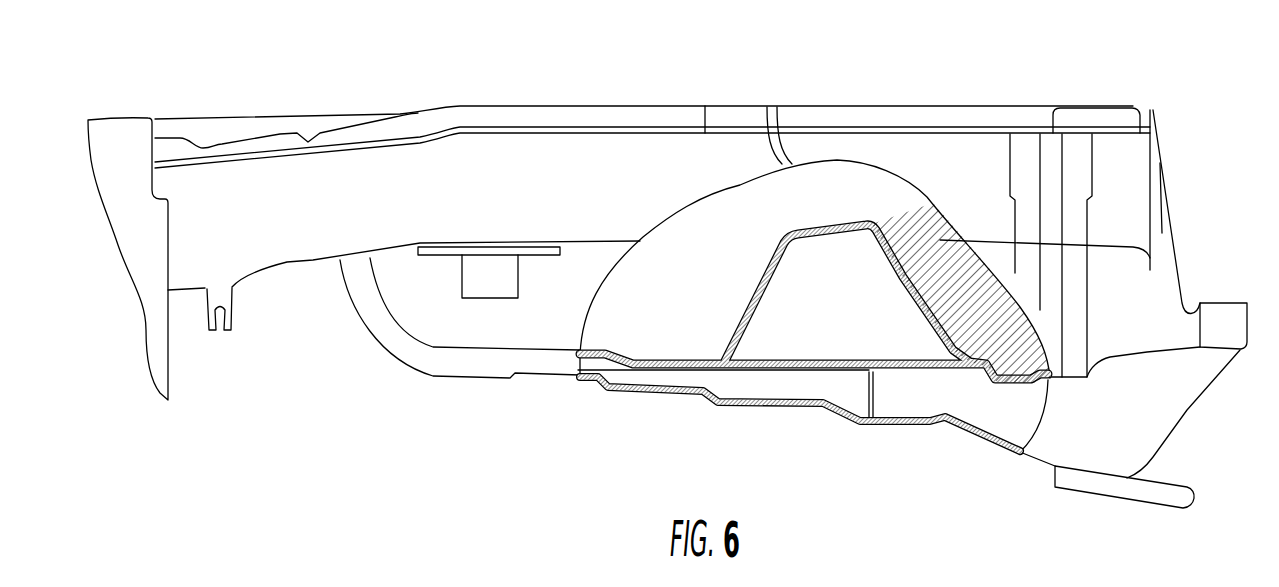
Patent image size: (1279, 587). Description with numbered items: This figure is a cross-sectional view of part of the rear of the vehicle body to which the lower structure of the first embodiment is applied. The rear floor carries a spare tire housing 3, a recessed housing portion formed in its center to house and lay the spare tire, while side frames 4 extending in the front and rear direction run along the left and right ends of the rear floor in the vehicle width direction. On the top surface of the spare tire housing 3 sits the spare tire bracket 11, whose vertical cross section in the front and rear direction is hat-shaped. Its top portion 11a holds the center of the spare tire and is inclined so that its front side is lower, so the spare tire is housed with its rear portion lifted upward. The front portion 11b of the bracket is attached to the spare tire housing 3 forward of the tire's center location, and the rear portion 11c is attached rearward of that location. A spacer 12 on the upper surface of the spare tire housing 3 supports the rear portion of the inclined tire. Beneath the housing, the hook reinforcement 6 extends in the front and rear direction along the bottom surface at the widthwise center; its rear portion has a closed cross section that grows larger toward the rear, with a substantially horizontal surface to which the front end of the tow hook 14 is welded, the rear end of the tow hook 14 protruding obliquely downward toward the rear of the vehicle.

The spare tire housing 3 is at (858, 372).
The side frame 4 is at (664, 105).
The hook reinforcement 6 is at (757, 414).
The spare tire bracket 11 is at (814, 276).
The top portion 11a is at (829, 231).
The front portion 11b is at (657, 353).
The rear portion 11c is at (1015, 384).
The spacer 12 is at (940, 233).
The tow hook 14 is at (1137, 489).